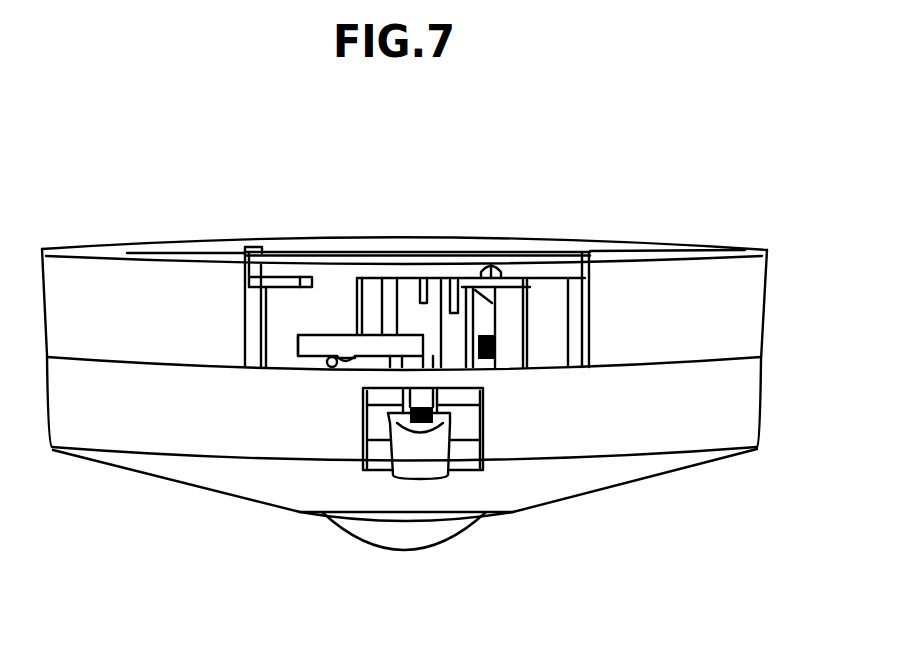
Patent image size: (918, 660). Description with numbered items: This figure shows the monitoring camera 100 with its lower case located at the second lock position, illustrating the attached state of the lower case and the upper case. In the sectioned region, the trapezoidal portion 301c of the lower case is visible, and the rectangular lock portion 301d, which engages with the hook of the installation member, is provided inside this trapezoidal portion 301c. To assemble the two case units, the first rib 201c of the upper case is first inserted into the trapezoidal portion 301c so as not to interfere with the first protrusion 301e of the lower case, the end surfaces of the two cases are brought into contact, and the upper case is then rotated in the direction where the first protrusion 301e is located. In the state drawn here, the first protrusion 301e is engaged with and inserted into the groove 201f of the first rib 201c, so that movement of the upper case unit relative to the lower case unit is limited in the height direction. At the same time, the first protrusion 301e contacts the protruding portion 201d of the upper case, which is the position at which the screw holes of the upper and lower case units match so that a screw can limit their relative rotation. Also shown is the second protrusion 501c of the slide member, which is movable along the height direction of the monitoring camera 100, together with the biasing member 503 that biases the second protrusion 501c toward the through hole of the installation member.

The monitoring camera 100 is at (172, 497).
The lock portion 301d is at (280, 280).
The protruding portion 201d is at (345, 352).
The trapezoidal portion 301c is at (372, 300).
The second protrusion 501c is at (492, 262).
The first rib 201c is at (316, 349).
The first protrusion 301e is at (332, 372).
The groove 201f is at (371, 364).
The biasing member 503 is at (485, 360).